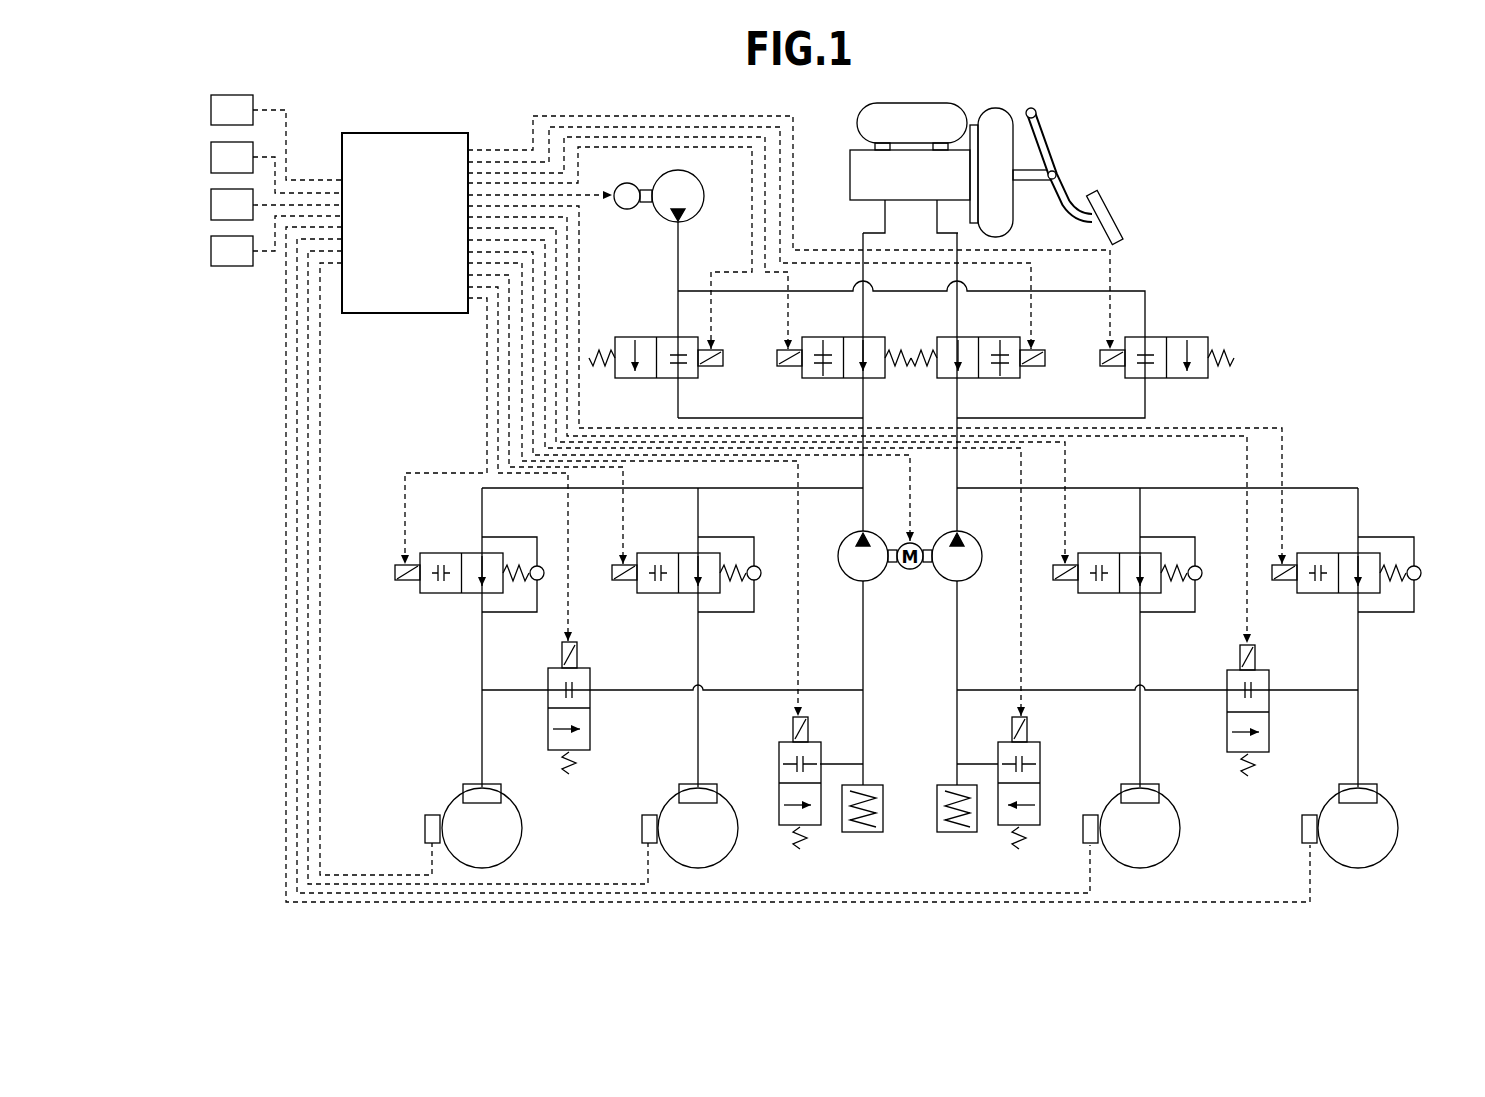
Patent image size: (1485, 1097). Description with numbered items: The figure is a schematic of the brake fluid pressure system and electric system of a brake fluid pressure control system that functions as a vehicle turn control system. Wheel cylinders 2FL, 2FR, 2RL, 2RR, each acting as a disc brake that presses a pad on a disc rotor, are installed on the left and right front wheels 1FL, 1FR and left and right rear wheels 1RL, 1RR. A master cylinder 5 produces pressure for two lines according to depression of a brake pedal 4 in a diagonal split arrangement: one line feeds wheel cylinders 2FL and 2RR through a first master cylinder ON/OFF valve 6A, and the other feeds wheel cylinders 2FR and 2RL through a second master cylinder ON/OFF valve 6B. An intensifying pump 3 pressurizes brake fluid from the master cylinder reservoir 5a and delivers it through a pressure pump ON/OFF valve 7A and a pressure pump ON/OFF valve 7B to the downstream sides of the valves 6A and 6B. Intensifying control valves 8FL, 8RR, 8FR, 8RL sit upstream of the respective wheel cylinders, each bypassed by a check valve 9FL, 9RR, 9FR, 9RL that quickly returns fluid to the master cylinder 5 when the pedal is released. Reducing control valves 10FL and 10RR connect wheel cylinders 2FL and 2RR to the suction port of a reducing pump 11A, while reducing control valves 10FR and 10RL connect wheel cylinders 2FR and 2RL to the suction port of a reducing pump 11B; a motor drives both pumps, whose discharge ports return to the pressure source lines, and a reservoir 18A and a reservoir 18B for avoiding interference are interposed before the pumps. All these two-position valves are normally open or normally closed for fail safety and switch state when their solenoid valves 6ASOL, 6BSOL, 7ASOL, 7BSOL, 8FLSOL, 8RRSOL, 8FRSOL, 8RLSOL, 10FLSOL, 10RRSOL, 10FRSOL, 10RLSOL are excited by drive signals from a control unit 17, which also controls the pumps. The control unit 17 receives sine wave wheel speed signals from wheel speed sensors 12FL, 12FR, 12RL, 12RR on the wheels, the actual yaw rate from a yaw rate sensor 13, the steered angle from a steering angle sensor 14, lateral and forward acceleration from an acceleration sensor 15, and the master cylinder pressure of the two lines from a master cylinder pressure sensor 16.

The left front wheel 1FL is at (519, 852).
The right rear wheel 1RR is at (736, 852).
The right front wheel 1FR is at (1179, 829).
The left rear wheel 1RL is at (1397, 829).
The wheel cylinder 2FL is at (464, 785).
The wheel cylinder 2RR is at (678, 785).
The wheel cylinder 2FR is at (1158, 786).
The wheel cylinder 2RL is at (1376, 786).
The intensifying pump 3 is at (654, 220).
The brake pedal 4 is at (1108, 210).
The master cylinder 5 is at (848, 178).
The master cylinder reservoir 5a is at (937, 103).
The first master cylinder ON/OFF valve 6A is at (845, 336).
The solenoid valve 6ASOL is at (790, 366).
The second master cylinder ON/OFF valve 6B is at (980, 382).
The solenoid valve 6BSOL is at (1035, 366).
The pressure pump ON/OFF valve 7A is at (658, 382).
The solenoid valve 7ASOL is at (722, 356).
The pressure pump ON/OFF valve 7B is at (1178, 384).
The solenoid valve 7BSOL is at (1100, 356).
The intensifying control valve 8FL is at (452, 602).
The solenoid valve 8FLSOL is at (405, 581).
The intensifying control valve 8RR is at (682, 602).
The solenoid valve 8RRSOL is at (623, 581).
The intensifying control valve 8FR is at (1122, 604).
The solenoid valve 8FRSOL is at (1065, 581).
The intensifying control valve 8RL is at (1342, 604).
The solenoid valve 8RLSOL is at (1282, 581).
The check valve 9FL is at (539, 563).
The check valve 9RR is at (761, 563).
The check valve 9FR is at (1200, 563).
The check valve 9RL is at (1418, 563).
The reducing control valve 10FL is at (540, 709).
The solenoid valve 10FLSOL is at (560, 655).
The reducing control valve 10RR is at (770, 752).
The solenoid valve 10RRSOL is at (793, 733).
The reducing control valve 10FR is at (1047, 752).
The solenoid valve 10FRSOL is at (1030, 727).
The reducing control valve 10RL is at (1275, 717).
The solenoid valve 10RLSOL is at (1256, 660).
The reducing pump 11A is at (870, 582).
The reducing pump 11B is at (943, 582).
The wheel speed sensor 12FL is at (425, 829).
The wheel speed sensor 12RR is at (642, 829).
The wheel speed sensor 12FR is at (1090, 815).
The wheel speed sensor 12RL is at (1310, 815).
The yaw rate sensor 13 is at (211, 110).
The steering angle sensor 14 is at (211, 157).
The acceleration sensor 15 is at (211, 204).
The master cylinder pressure sensor 16 is at (211, 251).
The control unit 17 is at (403, 133).
The reservoir 18A is at (863, 833).
The reservoir 18B is at (957, 833).